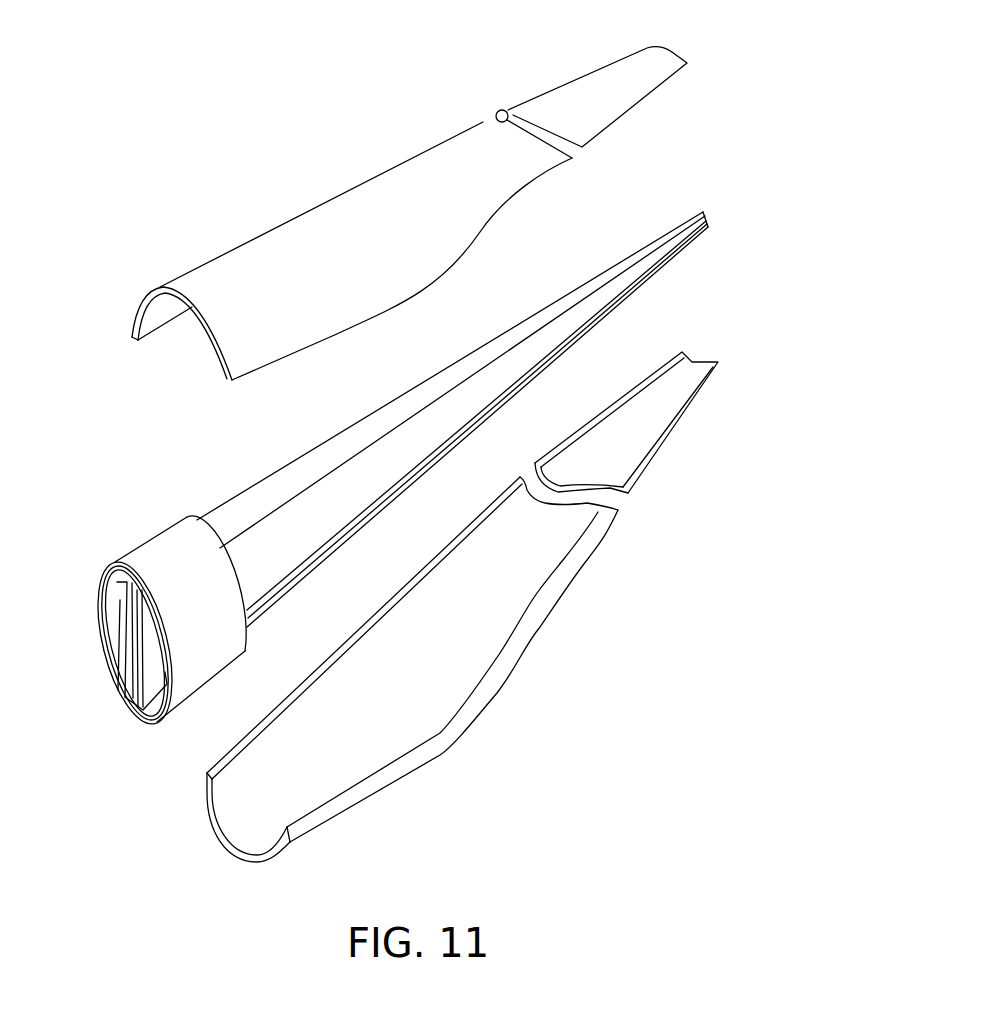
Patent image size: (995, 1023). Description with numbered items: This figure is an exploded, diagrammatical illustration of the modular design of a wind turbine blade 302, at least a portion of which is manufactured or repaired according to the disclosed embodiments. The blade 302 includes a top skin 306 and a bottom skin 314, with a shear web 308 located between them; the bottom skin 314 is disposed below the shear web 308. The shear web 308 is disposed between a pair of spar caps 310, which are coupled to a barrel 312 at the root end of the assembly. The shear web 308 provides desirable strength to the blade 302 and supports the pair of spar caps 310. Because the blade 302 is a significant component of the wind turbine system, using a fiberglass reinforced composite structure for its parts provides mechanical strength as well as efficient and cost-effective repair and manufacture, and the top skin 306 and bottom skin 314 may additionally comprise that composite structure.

The blade 302 is at (752, 118).
The top skin 306 is at (257, 224).
The shear web 308 is at (299, 510).
The spar caps 310 is at (122, 705).
The barrel 312 is at (145, 525).
The bottom skin 314 is at (391, 800).